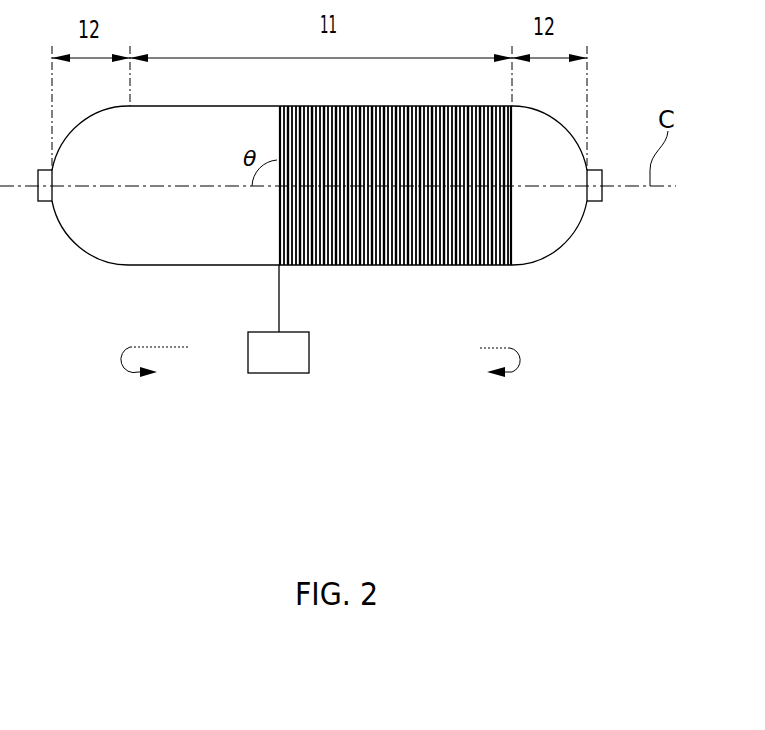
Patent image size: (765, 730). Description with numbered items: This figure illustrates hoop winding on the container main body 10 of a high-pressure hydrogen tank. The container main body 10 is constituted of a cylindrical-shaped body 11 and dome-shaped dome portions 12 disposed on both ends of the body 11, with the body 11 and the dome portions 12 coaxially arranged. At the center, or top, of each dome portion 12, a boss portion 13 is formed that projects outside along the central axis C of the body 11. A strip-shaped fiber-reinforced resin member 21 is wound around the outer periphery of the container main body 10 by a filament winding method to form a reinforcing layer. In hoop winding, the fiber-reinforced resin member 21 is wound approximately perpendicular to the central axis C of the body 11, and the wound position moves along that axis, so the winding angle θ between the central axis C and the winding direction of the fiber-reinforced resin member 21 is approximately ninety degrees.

The container main body 10 is at (324, 222).
The body 11 is at (203, 266).
The dome portion 12 is at (75, 240).
The boss portion 13 is at (43, 203).
The fiber-reinforced resin member 21 is at (280, 303).